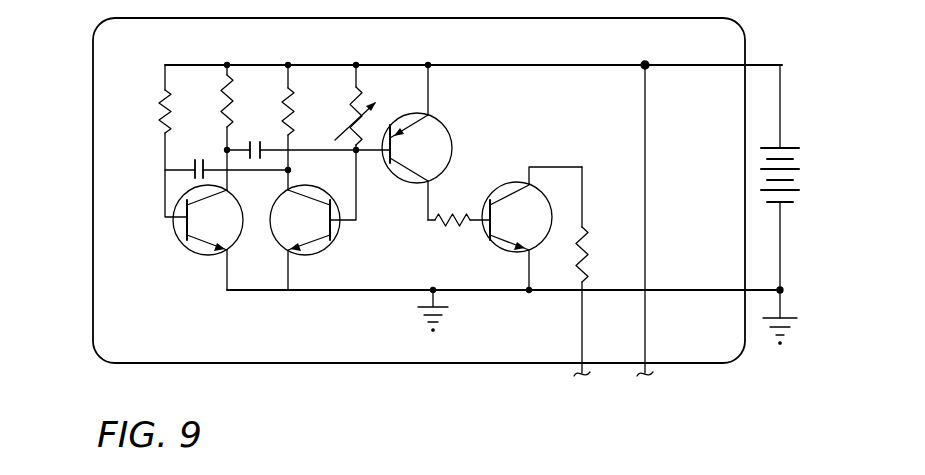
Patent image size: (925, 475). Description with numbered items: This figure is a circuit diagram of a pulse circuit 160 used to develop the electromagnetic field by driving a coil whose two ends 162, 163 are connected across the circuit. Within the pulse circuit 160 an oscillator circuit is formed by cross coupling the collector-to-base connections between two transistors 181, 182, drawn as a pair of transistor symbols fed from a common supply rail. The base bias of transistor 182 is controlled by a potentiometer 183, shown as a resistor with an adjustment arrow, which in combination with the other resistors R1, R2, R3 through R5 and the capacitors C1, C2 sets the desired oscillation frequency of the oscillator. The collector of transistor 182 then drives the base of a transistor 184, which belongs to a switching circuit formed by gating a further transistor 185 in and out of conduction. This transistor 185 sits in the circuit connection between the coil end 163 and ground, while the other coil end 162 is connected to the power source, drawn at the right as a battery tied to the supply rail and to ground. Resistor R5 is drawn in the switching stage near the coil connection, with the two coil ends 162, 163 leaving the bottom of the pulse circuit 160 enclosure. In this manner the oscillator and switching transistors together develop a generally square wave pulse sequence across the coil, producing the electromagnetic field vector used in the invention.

The pulse circuit 160 is at (118, 320).
The resistor R1 is at (165, 118).
The resistor R2 is at (218, 95).
The resistor R3 is at (287, 85).
The capacitor C1 is at (196, 164).
The capacitor C2 is at (247, 147).
The potentiometer 183 is at (360, 96).
The transistor 181 is at (187, 247).
The transistor 182 is at (337, 249).
The transistor 184 is at (448, 137).
The transistor 185 is at (510, 248).
The resistor R5 is at (584, 238).
The coil end 162 is at (645, 322).
The coil end 163 is at (582, 337).